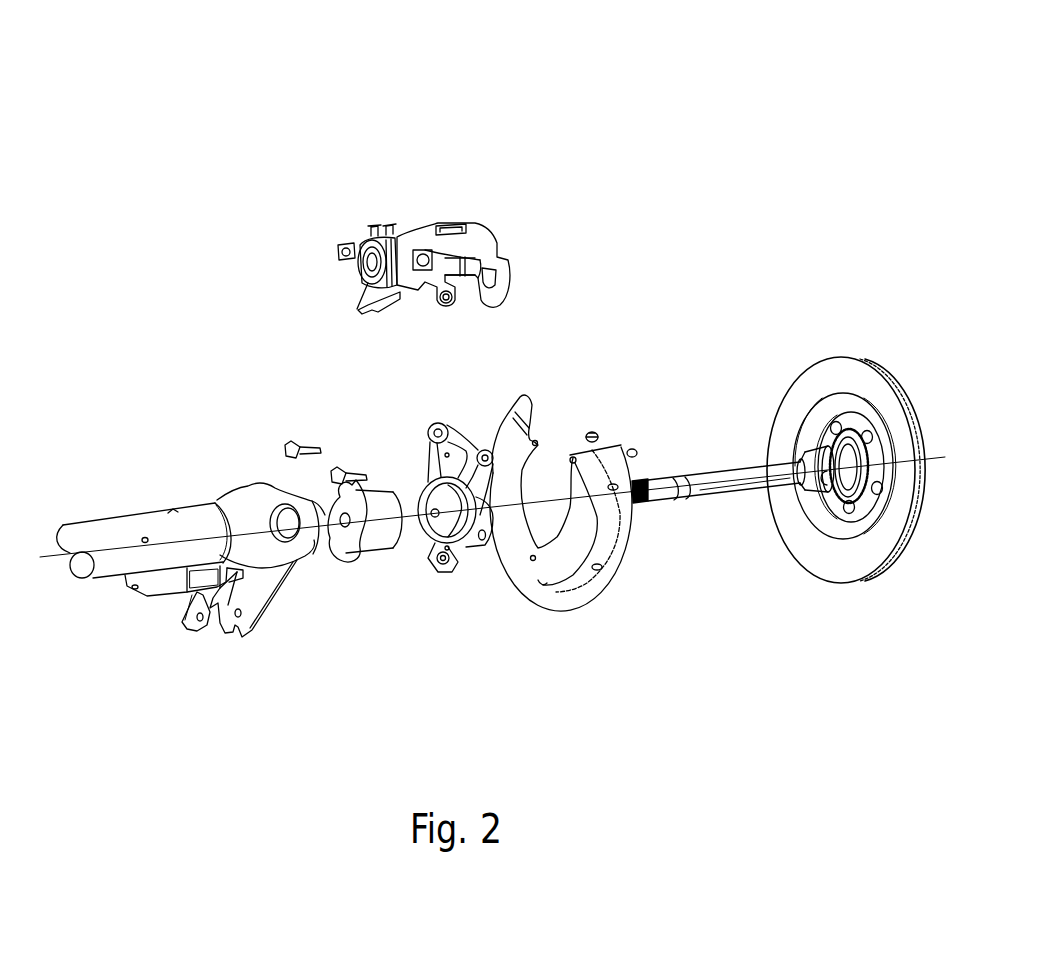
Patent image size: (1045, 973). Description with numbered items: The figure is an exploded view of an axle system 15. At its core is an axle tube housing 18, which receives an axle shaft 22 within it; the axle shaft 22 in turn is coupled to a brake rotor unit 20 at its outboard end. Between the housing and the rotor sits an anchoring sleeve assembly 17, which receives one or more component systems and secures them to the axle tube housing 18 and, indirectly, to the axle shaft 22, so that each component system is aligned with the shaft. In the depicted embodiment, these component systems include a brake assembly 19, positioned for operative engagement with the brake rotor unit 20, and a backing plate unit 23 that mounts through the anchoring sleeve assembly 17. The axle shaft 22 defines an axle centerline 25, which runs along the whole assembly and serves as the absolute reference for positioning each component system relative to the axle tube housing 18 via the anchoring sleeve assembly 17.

The axle system 15 is at (643, 90).
The anchoring sleeve assembly 17 is at (456, 412).
The axle tube housing 18 is at (183, 556).
The brake assembly 19 is at (417, 303).
The brake rotor unit 20 is at (808, 395).
The axle shaft 22 is at (720, 472).
The backing plate unit 23 is at (556, 438).
The axle centerline 25 is at (737, 485).